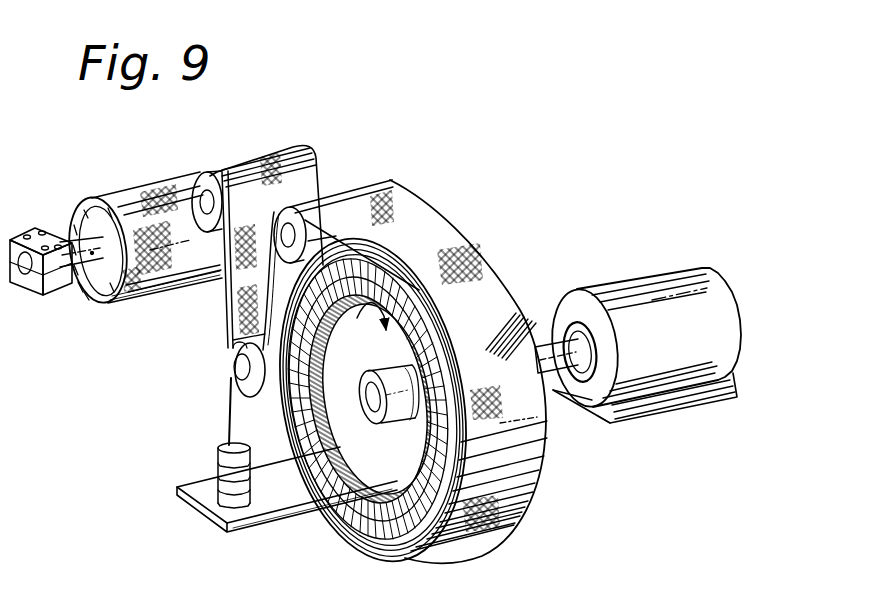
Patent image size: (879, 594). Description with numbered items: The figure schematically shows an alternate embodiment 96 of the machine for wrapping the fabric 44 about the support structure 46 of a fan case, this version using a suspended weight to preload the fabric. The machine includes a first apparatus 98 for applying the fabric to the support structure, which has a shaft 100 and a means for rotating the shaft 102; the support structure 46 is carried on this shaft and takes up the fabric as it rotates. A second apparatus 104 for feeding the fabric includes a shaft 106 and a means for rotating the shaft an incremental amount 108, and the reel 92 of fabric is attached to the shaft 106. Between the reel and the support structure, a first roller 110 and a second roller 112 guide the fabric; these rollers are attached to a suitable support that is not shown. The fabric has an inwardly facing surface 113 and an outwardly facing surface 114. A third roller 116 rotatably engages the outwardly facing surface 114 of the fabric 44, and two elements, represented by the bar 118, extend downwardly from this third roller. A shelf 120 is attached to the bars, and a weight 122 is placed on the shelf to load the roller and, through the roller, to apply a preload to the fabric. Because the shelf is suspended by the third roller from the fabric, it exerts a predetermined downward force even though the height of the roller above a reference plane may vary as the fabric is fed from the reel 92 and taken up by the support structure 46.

The fabric 44 is at (423, 204).
The support structure 46 is at (440, 430).
The reel of fabric 92 is at (122, 305).
The alternate embodiment of machine 96 is at (112, 398).
The first apparatus 98 is at (556, 441).
The shaft 100 is at (541, 352).
The means for rotating the shaft 102 is at (690, 355).
The second apparatus 104 is at (110, 314).
The shaft 106 is at (96, 300).
The means for rotating the shaft an incremental amount 108 is at (45, 224).
The first roller 110 is at (203, 183).
The second roller 112 is at (293, 257).
The inwardly facing surface 113 is at (247, 322).
The outwardly facing surface 114 is at (355, 202).
The third roller 116 is at (242, 350).
The bar 118 is at (230, 412).
The shelf 120 is at (226, 512).
The weight 122 is at (228, 508).